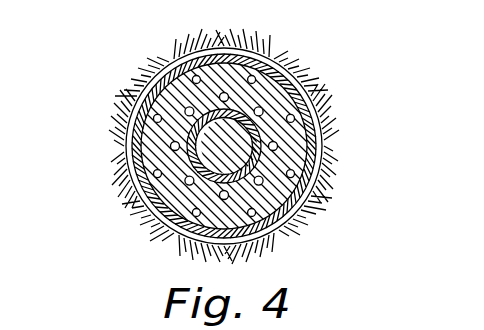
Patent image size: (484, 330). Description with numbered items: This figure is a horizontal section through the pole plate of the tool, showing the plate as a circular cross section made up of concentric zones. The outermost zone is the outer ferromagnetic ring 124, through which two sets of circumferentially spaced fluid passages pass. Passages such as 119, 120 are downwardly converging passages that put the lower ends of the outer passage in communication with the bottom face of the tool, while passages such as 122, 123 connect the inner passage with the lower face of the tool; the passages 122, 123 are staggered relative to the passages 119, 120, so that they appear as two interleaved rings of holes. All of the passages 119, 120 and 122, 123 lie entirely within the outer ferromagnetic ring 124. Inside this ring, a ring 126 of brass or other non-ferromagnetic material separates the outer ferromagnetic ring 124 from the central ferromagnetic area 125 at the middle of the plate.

The fluid passage 119 is at (130, 118).
The fluid passage 120 is at (226, 101).
The fluid passage 122 is at (143, 185).
The fluid passage 123 is at (302, 101).
The outer ferromagnetic ring 124 is at (255, 228).
The central ferromagnetic area 125 is at (192, 170).
The ring of brass or other non-ferromagnetic material 126 is at (240, 118).